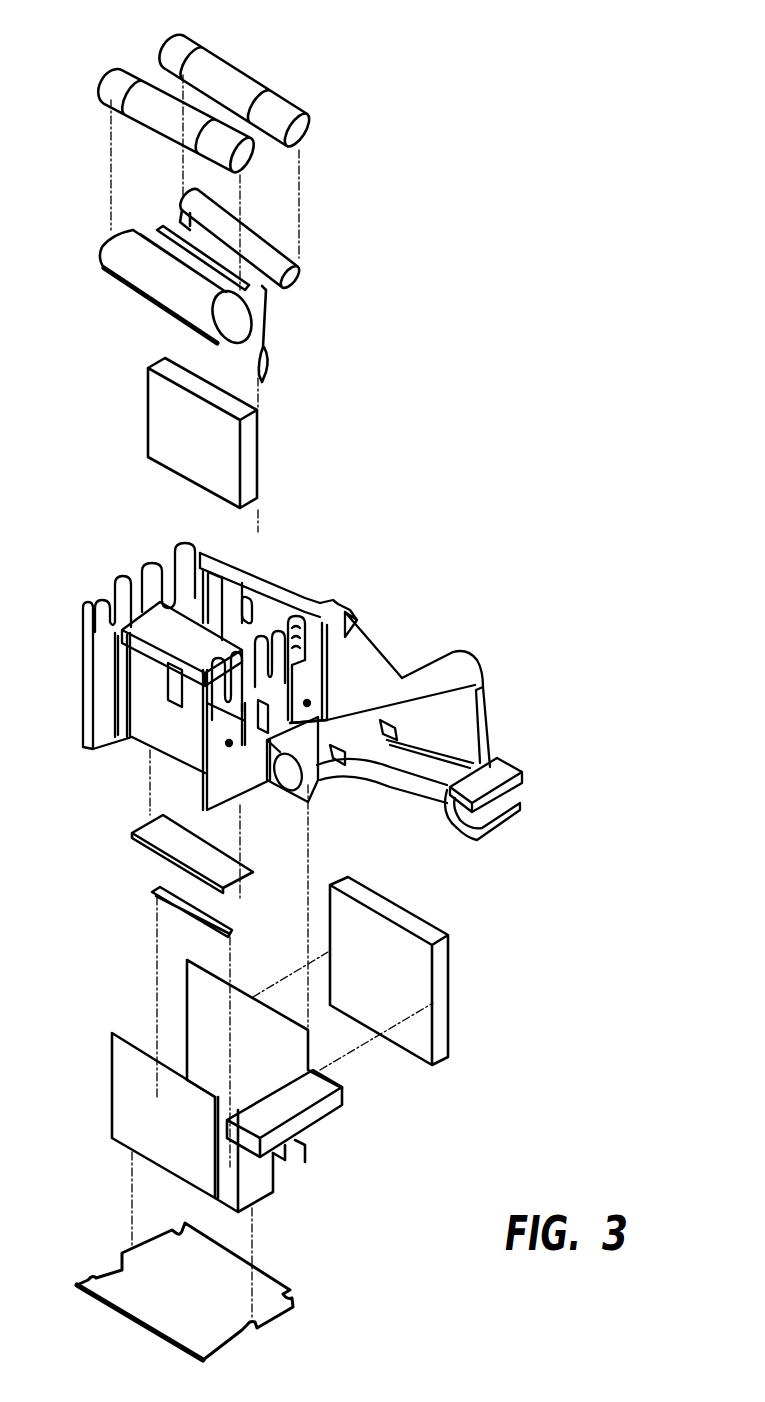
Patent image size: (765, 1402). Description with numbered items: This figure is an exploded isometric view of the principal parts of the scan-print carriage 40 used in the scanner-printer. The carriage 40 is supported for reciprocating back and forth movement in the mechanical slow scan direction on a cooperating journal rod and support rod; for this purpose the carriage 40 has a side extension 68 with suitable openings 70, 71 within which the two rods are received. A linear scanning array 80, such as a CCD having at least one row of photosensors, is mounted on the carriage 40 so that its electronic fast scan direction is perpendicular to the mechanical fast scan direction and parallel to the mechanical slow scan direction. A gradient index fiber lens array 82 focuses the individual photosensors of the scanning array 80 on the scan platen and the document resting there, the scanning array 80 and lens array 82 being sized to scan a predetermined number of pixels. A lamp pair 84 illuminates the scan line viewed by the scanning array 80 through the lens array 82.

The carriage 40 is at (315, 687).
The side extension 68 is at (460, 653).
The opening 70 is at (273, 788).
The opening 71 is at (497, 807).
The linear scanning array 80 is at (183, 910).
The gradient index fiber lens array 82 is at (257, 480).
The lamp pair 84 is at (237, 76).